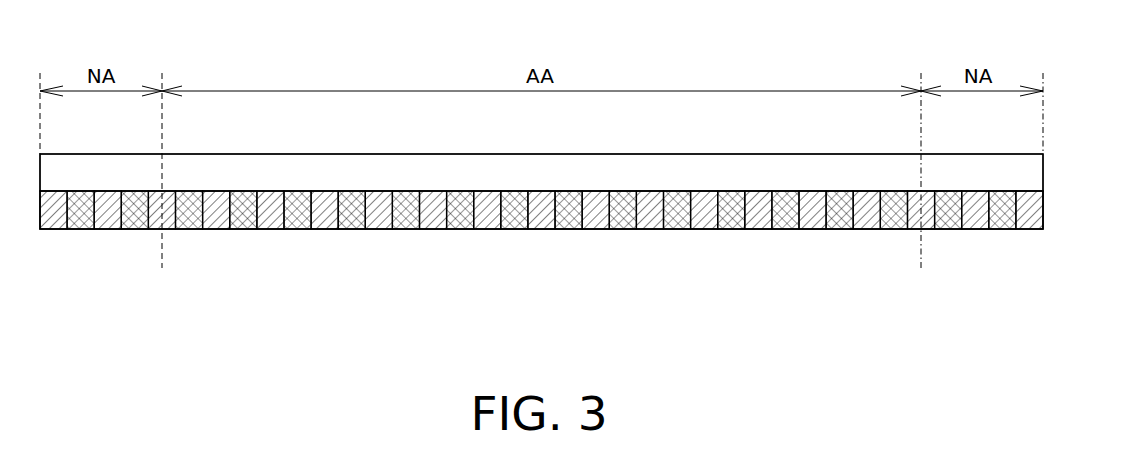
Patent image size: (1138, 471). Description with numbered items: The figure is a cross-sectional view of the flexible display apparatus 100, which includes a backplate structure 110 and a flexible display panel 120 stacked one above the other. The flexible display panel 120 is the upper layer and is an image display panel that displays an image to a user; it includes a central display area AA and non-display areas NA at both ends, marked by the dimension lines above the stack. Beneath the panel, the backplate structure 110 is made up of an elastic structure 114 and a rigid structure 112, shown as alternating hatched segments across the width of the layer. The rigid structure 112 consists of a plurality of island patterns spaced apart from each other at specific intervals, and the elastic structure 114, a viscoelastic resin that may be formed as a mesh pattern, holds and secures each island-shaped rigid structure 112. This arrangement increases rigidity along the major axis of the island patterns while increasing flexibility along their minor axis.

The flexible display apparatus 100 is at (1005, 27).
The backplate structure 110 is at (579, 237).
The rigid structure 112 is at (785, 213).
The elastic structure 114 is at (1028, 217).
The flexible display panel 120 is at (1043, 174).